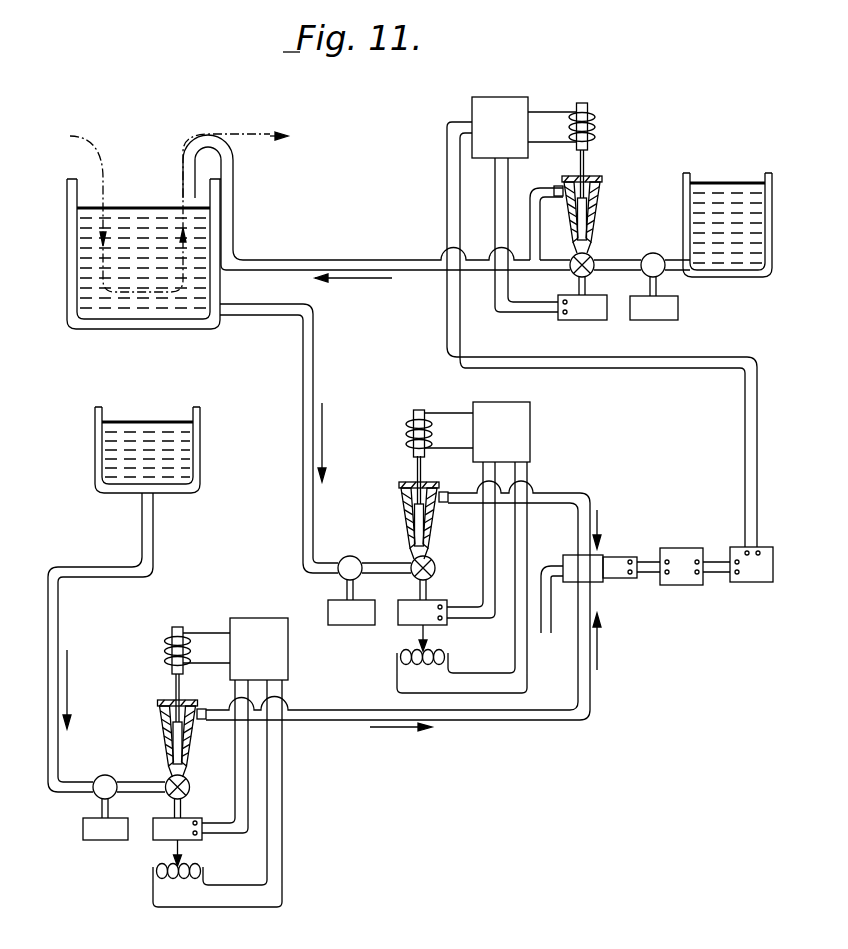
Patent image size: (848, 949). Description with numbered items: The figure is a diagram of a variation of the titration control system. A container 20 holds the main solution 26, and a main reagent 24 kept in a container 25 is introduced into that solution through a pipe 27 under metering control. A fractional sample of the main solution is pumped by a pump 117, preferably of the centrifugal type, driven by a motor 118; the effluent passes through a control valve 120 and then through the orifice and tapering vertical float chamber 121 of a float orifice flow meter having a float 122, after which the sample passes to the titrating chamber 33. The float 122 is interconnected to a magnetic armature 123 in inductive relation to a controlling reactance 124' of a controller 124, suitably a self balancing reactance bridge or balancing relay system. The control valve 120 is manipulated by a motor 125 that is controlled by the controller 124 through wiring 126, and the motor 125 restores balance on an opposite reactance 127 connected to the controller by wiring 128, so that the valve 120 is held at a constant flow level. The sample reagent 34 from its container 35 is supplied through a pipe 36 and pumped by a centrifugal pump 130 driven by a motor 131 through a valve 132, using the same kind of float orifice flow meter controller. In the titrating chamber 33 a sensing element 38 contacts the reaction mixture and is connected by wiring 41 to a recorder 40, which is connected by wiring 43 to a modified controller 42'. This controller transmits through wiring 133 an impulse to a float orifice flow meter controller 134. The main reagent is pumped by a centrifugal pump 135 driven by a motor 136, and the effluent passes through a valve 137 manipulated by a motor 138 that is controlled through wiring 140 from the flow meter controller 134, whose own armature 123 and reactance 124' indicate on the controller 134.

The container 20 is at (66, 226).
The main reagent 24 is at (730, 181).
The container 25 is at (683, 216).
The main solution 26 is at (141, 186).
The pipe 27 is at (314, 263).
The titrating chamber 33 is at (565, 556).
The sample reagent 34 is at (140, 407).
The container 35 is at (95, 447).
The pipe 36 is at (58, 629).
The sensing element 38 is at (620, 557).
The recorder 40 is at (680, 548).
The wiring 41 is at (652, 580).
The modified controller 42' is at (754, 580).
The wiring 43 is at (718, 580).
The pump 117 is at (356, 548).
The motor 118 is at (333, 602).
The control valve 120 is at (434, 570).
The float chamber 121 is at (600, 213).
The float 122 is at (601, 195).
The magnetic armature 123 is at (586, 105).
The controller 124 is at (383, 527).
The controlling reactance 124' is at (382, 387).
The motor 125 is at (432, 615).
The wiring 126 is at (483, 587).
The opposite reactance 127 is at (398, 655).
The wiring 128 is at (525, 659).
The centrifugal pump 130 is at (108, 776).
The motor 131 is at (96, 842).
The valve 132 is at (186, 781).
The wiring 133 is at (722, 357).
The float orifice flow meter controller 134 is at (472, 106).
The centrifugal pump 135 is at (655, 254).
The motor 136 is at (679, 303).
The valve 137 is at (571, 273).
The motor 138 is at (589, 320).
The wiring 140 is at (495, 192).